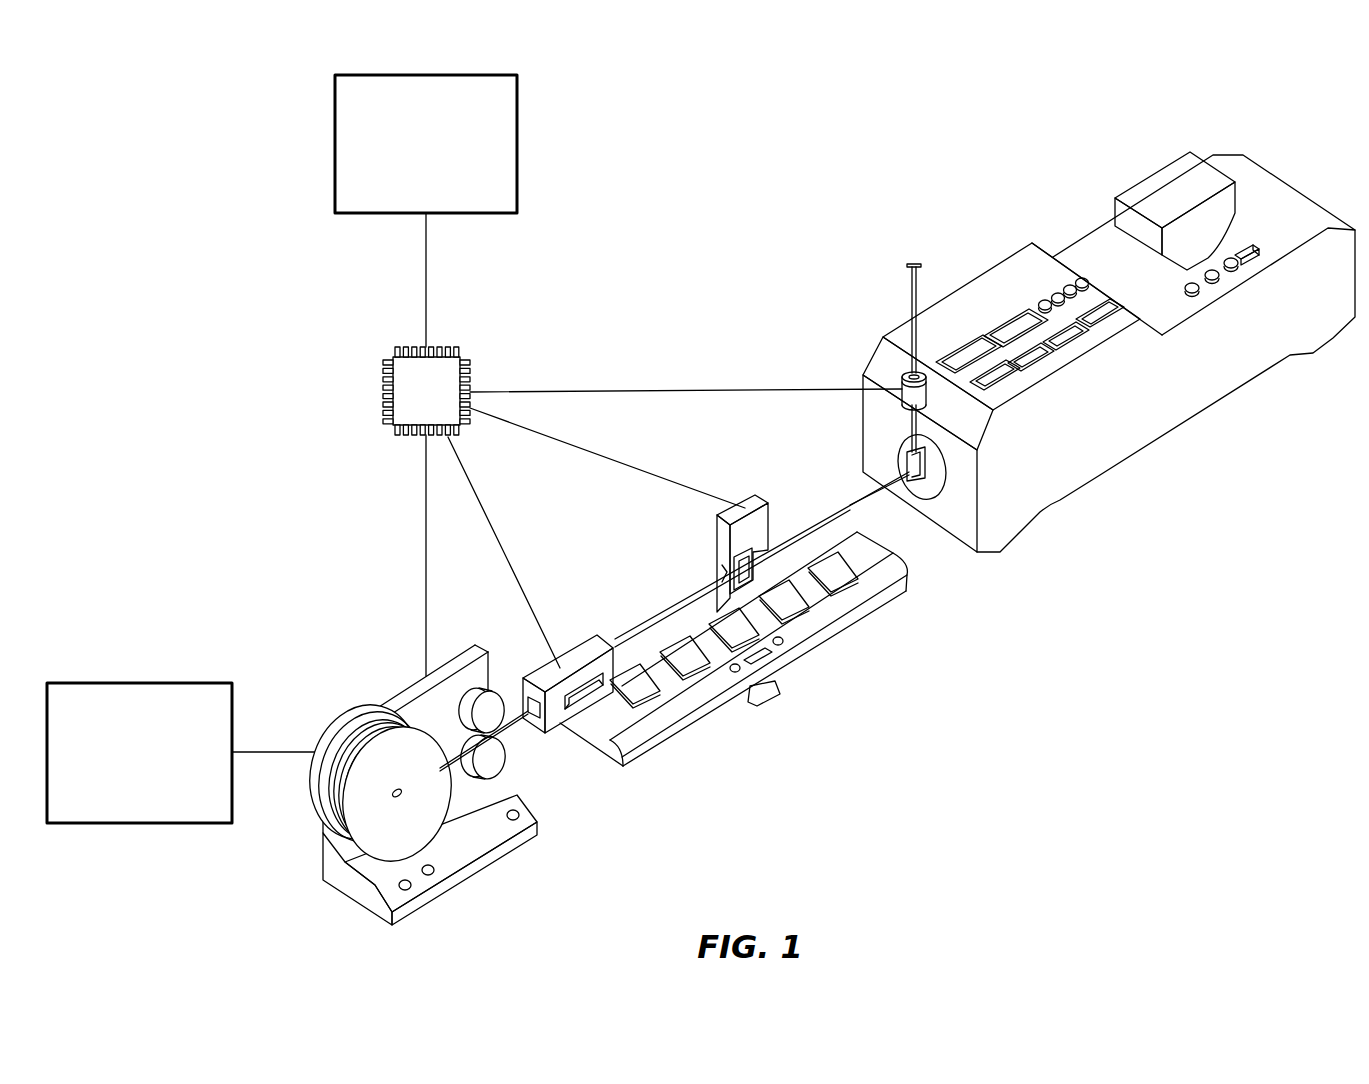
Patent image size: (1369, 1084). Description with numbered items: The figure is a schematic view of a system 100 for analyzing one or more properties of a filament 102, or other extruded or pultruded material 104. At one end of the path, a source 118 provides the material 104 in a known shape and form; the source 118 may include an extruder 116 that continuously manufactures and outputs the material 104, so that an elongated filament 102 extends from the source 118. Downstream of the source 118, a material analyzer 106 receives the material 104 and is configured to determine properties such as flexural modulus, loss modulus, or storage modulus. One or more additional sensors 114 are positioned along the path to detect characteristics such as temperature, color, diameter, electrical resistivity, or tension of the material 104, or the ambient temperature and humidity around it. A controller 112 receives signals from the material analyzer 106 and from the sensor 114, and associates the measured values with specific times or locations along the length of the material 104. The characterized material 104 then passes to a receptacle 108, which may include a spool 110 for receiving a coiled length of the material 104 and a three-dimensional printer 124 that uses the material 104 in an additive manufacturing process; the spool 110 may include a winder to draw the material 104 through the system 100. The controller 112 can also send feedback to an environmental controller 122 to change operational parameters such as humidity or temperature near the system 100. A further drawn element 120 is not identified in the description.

The system 100 is at (1293, 78).
The filament 102 is at (696, 589).
The material 104 is at (640, 638).
The material analyzer 106 is at (583, 655).
The receptacle 108 is at (415, 700).
The spool 110 is at (365, 725).
The controller 112 is at (410, 406).
The sensor 114 is at (755, 494).
The extruder 116 is at (1128, 436).
The source 118 is at (1143, 198).
The filament inlet 120 is at (898, 457).
The environmental controller 122 is at (412, 186).
The 3D printer 124 is at (123, 780).